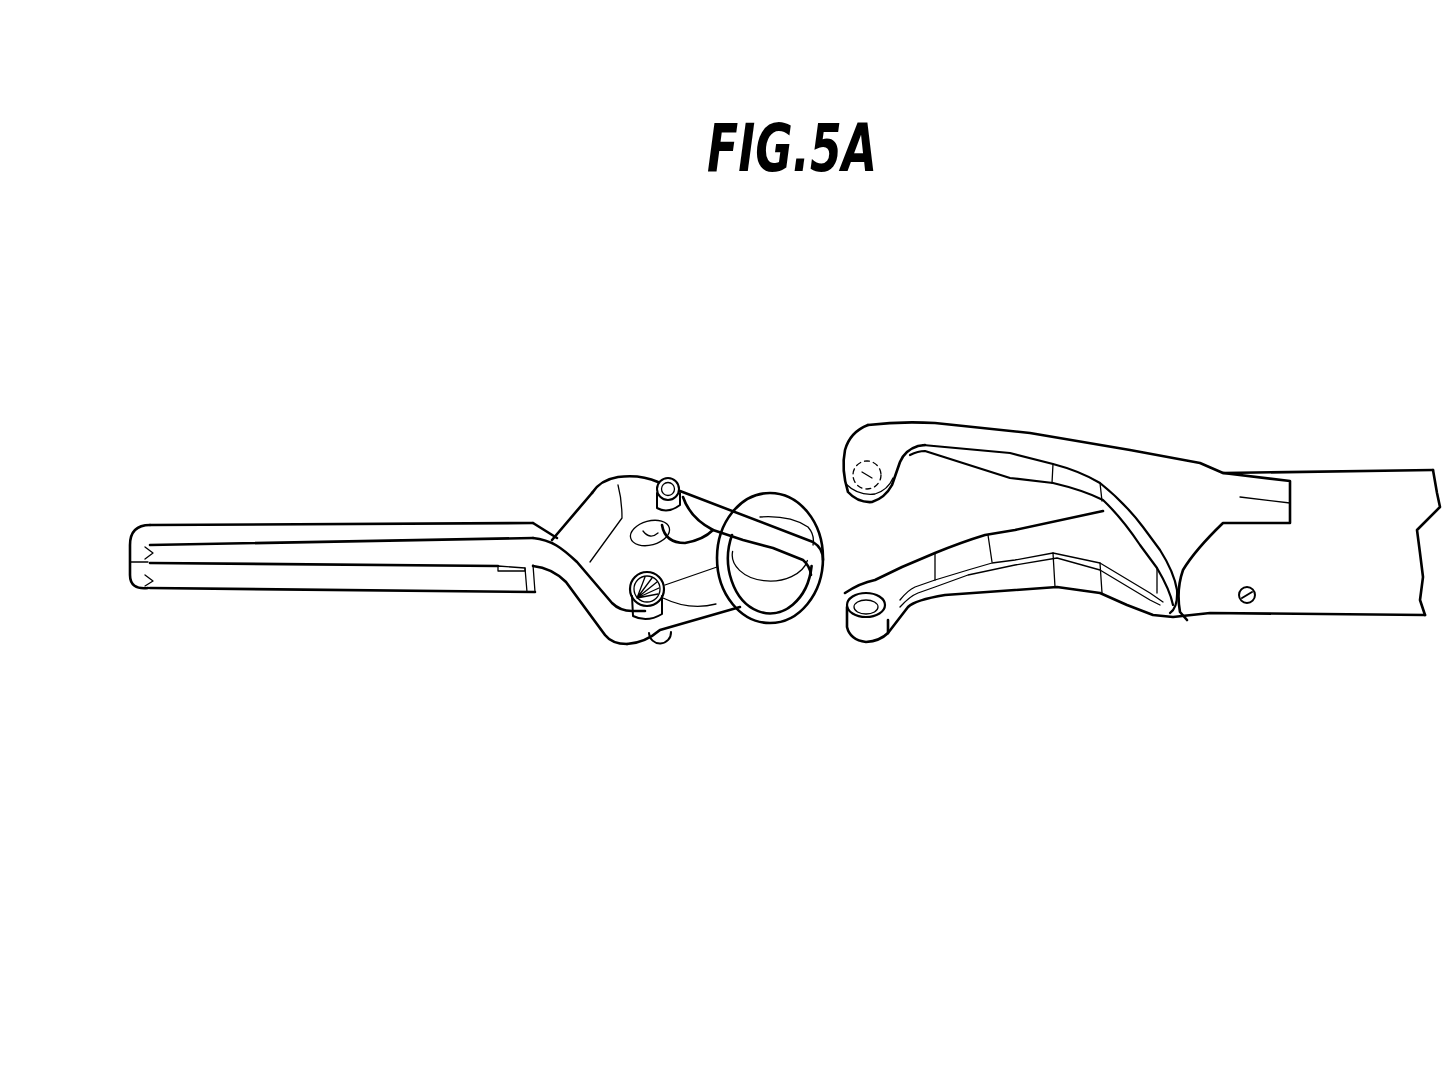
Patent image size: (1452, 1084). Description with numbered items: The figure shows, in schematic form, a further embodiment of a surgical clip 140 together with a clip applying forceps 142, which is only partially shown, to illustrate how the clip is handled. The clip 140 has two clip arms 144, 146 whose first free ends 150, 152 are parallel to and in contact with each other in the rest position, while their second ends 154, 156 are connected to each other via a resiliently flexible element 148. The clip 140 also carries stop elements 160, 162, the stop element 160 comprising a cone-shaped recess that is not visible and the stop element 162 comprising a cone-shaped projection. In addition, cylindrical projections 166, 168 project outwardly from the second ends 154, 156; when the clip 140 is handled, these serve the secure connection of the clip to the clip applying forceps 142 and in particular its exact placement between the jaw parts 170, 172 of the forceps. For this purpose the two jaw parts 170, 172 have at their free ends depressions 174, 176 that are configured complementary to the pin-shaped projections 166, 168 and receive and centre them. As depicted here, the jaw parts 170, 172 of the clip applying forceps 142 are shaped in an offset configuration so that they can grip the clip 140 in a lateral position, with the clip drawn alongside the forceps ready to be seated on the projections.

The surgical clip 140 is at (478, 558).
The clip applying forceps 142 is at (1134, 521).
The clip arm 144 is at (388, 634).
The clip arm 146 is at (387, 516).
The resiliently flexible element 148 is at (806, 638).
The first free end 150 is at (210, 580).
The first free end 152 is at (214, 536).
The second end 154 is at (719, 556).
The second end 156 is at (644, 662).
The stop element 160 is at (590, 493).
The stop element 162 is at (638, 615).
The cylindrical projection 166 is at (668, 486).
The cylindrical projection 168 is at (666, 643).
The jaw part 170 is at (1130, 487).
The jaw part 172 is at (1135, 609).
The depression 174 is at (865, 461).
The depression 176 is at (882, 636).